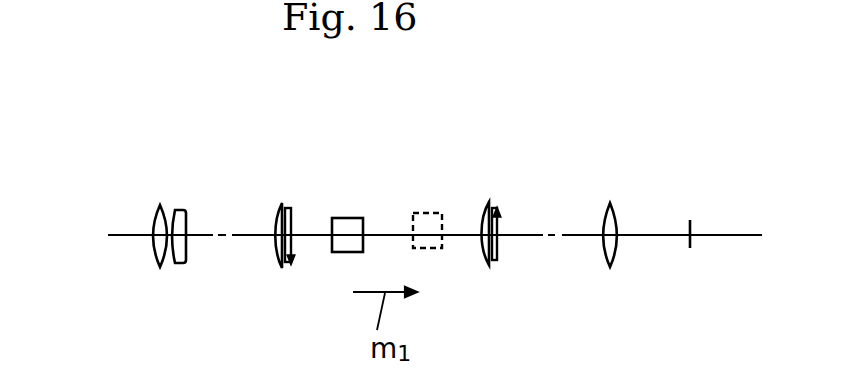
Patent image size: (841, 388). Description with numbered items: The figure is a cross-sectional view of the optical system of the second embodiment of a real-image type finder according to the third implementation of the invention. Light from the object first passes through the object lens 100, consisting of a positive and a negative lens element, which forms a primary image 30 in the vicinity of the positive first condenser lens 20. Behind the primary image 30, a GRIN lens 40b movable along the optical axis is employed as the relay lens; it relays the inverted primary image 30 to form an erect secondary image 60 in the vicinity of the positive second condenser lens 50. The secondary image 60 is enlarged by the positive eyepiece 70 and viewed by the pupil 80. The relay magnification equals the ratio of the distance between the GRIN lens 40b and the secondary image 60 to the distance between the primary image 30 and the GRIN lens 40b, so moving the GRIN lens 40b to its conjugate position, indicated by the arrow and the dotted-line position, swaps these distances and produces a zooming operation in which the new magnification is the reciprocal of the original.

The object lens 100 is at (198, 286).
The first condenser lens 20 is at (272, 216).
The primary image 30 is at (295, 215).
The GRIN lens 40b is at (353, 217).
The second condenser lens 50 is at (485, 263).
The secondary image 60 is at (502, 248).
The eyepiece 70 is at (617, 211).
The pupil 80 is at (693, 228).